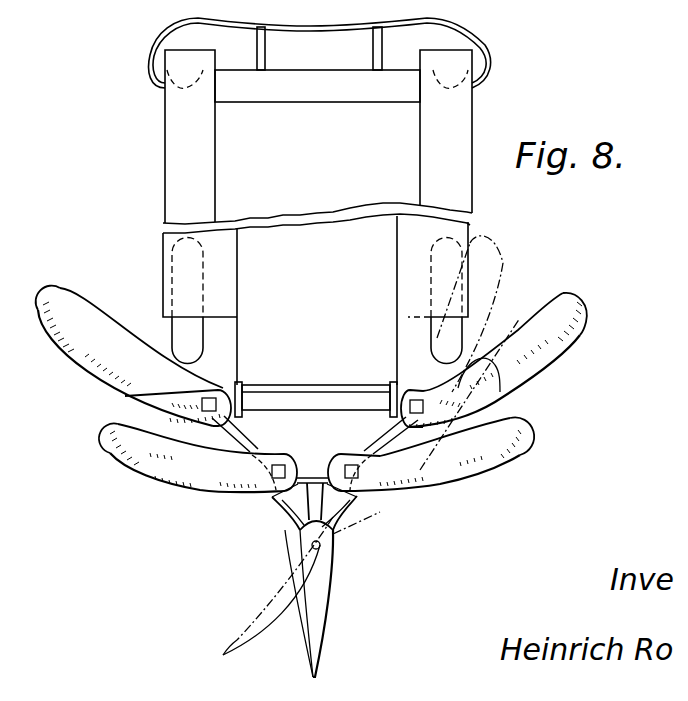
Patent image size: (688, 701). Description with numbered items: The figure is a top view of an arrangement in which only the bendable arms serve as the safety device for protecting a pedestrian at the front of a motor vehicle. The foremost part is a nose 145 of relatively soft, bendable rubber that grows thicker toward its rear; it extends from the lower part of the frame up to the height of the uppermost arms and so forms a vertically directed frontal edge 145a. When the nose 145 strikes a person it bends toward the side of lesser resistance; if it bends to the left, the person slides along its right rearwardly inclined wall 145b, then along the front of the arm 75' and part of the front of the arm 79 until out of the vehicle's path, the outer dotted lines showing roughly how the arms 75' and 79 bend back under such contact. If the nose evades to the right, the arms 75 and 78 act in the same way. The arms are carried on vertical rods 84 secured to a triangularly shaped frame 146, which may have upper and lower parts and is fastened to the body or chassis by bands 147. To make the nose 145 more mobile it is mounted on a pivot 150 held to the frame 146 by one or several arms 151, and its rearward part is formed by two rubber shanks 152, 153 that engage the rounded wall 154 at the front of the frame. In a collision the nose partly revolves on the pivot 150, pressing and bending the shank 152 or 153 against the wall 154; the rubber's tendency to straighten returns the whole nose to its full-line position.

The arm 78 is at (80, 310).
The arm 79 is at (585, 335).
The bands 147 is at (140, 394).
The arm 75 is at (198, 462).
The arm 75' is at (446, 454).
The triangularly shaped frame 146 is at (236, 447).
The vertical rods 84 is at (370, 497).
The rounded wall 154 is at (303, 488).
The rubber shank 152 is at (285, 507).
The rubber shank 153 is at (355, 518).
The arms 151 is at (308, 522).
The pivot 150 is at (311, 549).
The nose 145 is at (330, 578).
The vertically directed frontal edge 145a is at (313, 675).
The right rearwardly inclined wall 145b is at (327, 598).